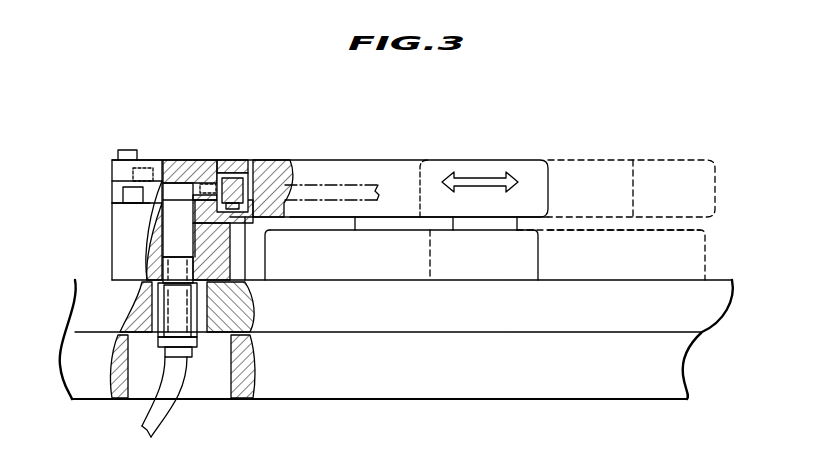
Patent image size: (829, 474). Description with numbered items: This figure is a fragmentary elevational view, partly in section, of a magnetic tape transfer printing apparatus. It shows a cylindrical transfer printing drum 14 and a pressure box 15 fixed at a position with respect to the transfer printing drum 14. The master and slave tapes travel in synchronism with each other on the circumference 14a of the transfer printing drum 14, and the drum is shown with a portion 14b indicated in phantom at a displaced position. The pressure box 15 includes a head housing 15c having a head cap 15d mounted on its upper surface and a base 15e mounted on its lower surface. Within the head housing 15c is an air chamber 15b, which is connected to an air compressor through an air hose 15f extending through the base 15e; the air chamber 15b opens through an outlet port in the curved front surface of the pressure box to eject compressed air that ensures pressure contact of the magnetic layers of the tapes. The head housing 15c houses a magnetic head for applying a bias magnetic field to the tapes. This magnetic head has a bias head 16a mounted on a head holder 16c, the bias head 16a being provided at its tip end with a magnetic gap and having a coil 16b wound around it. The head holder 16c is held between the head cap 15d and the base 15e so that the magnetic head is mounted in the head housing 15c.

The transfer printing drum 14 is at (350, 158).
The circumference of the transfer printing drum 14a is at (545, 178).
The slot of table 14b is at (428, 218).
The pressure box 15 is at (151, 157).
The air chamber 15b is at (184, 190).
The head housing 15c is at (118, 192).
The head cap 15d is at (120, 172).
The base 15e is at (118, 232).
The air hose 15f is at (170, 407).
The bias head 16a is at (273, 165).
The coil 16b is at (242, 178).
The head holder 16c is at (201, 183).